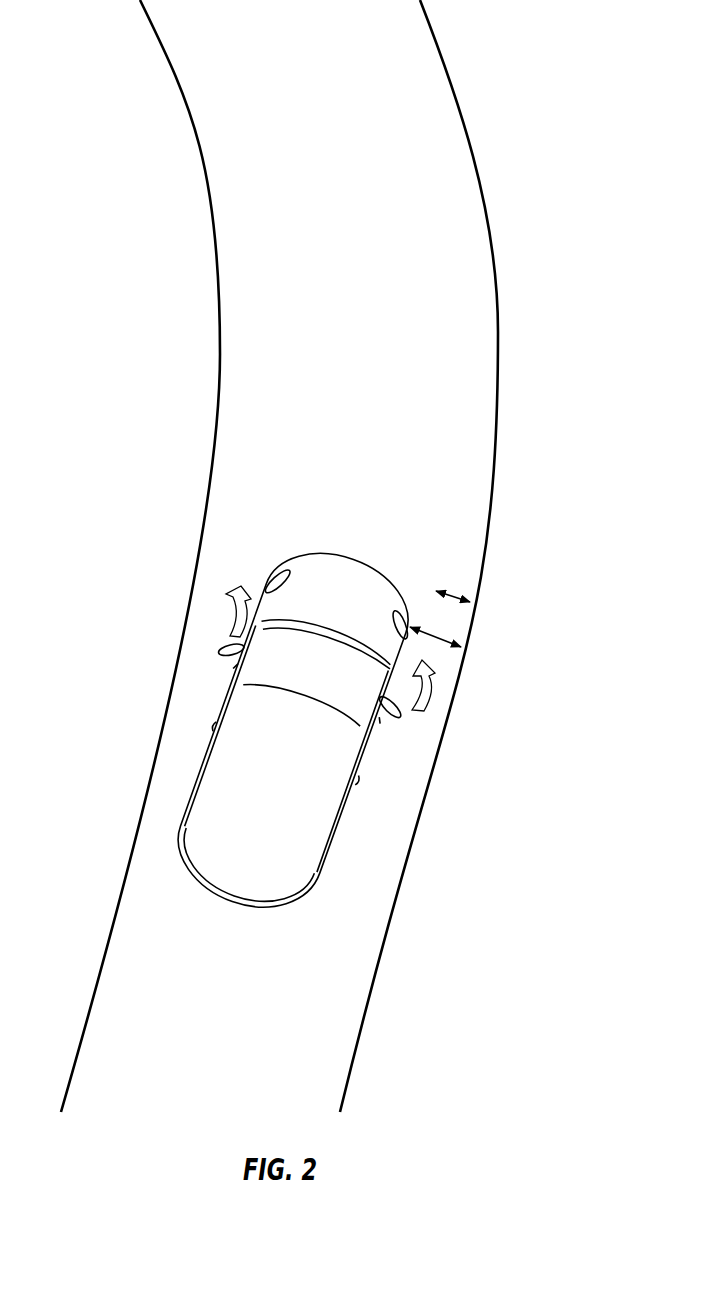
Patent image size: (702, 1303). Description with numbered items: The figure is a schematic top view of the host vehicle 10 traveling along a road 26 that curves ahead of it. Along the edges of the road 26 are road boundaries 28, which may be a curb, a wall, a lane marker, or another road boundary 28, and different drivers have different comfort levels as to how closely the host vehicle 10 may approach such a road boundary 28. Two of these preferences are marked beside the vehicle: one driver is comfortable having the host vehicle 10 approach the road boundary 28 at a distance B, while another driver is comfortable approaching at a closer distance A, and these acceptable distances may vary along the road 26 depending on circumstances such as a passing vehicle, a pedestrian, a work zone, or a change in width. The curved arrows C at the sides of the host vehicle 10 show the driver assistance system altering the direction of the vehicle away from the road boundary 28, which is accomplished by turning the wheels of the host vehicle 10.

The host vehicle 10 is at (386, 789).
The road 26 is at (311, 556).
The road boundary 28 is at (498, 410).
The distance A is at (453, 582).
The distance B is at (435, 628).
The arrows C is at (239, 587).